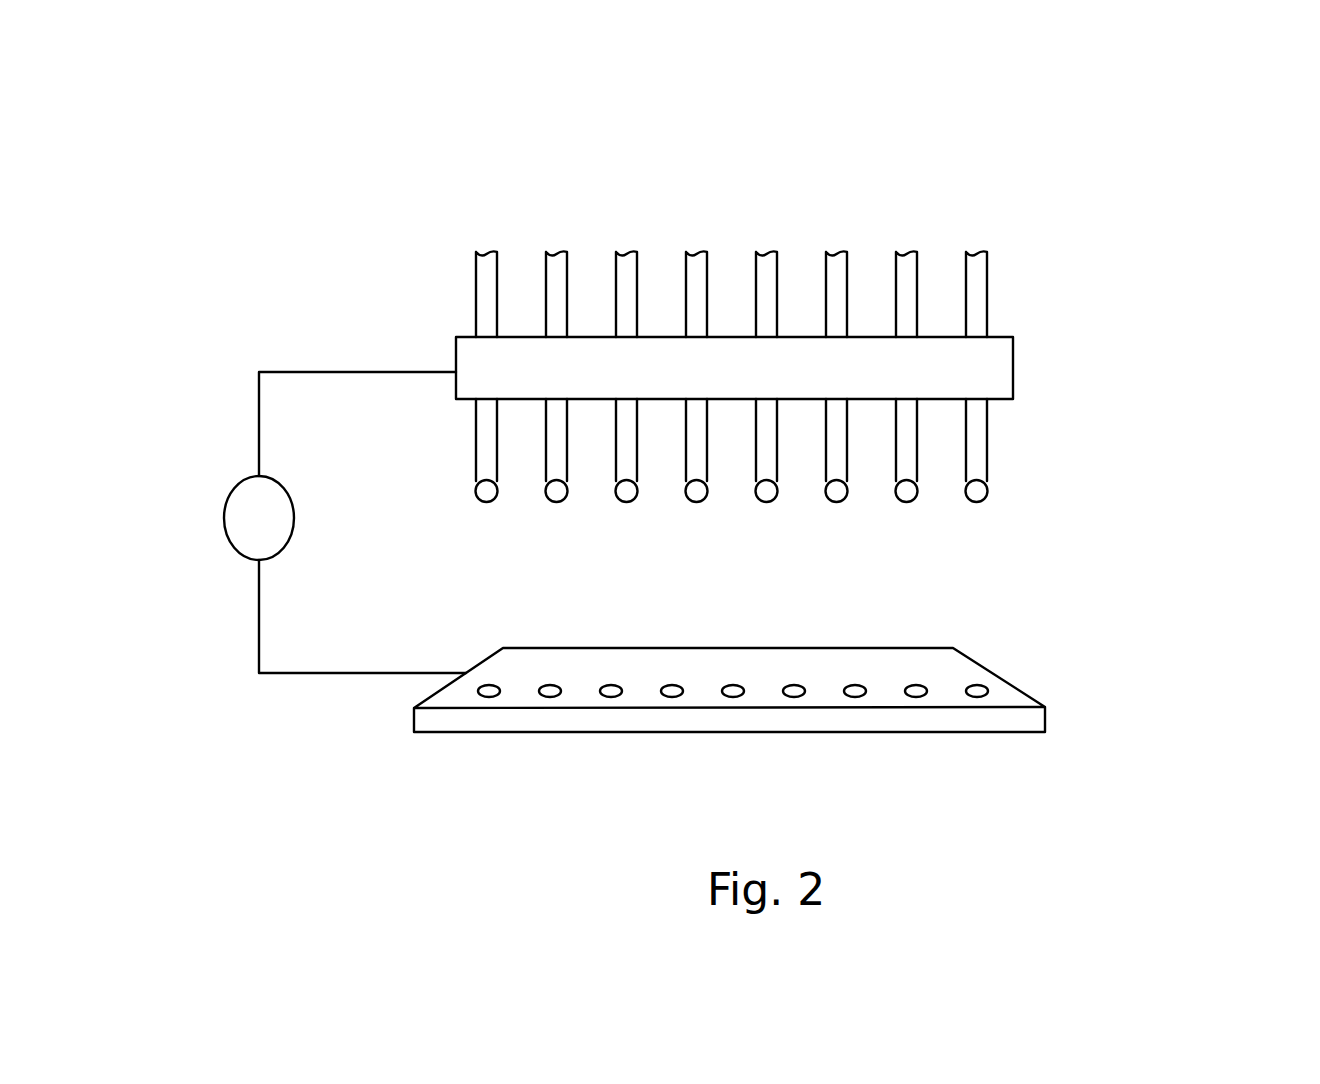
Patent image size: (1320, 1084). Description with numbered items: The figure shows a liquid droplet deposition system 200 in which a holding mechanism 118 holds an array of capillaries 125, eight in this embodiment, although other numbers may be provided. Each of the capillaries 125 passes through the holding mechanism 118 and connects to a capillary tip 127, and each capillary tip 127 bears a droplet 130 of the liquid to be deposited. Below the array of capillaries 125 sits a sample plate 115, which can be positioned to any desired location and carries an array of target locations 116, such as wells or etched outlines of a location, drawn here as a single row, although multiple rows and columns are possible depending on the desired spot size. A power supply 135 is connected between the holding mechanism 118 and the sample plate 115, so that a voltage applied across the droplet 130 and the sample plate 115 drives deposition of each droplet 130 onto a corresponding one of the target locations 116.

The liquid droplet deposition system 200 is at (1152, 183).
The holding mechanism 118 is at (1013, 372).
The capillaries 125 is at (476, 288).
The capillary tip 127 is at (476, 437).
The droplet 130 is at (476, 497).
The sample plate 115 is at (483, 660).
The target locations 116 is at (489, 698).
The power supply 135 is at (225, 525).